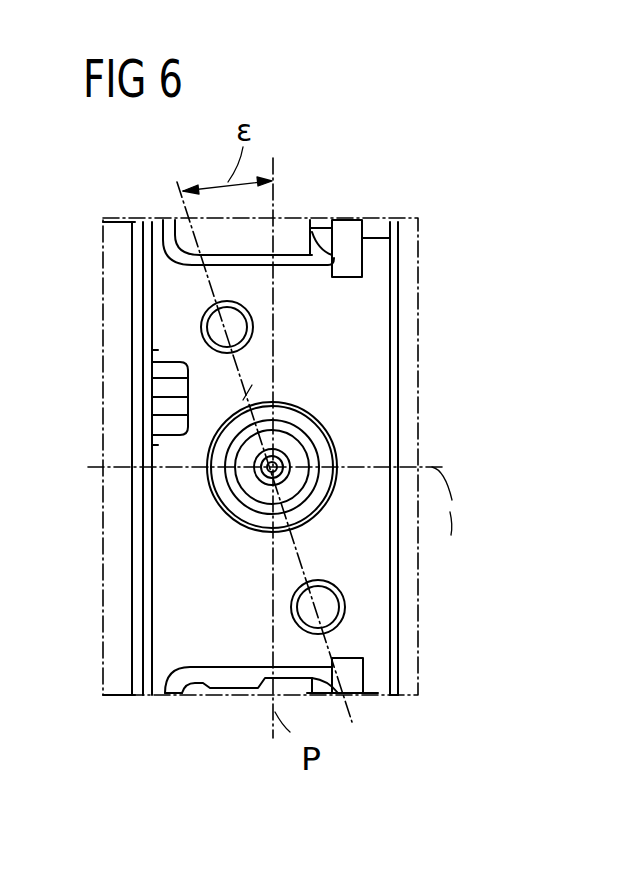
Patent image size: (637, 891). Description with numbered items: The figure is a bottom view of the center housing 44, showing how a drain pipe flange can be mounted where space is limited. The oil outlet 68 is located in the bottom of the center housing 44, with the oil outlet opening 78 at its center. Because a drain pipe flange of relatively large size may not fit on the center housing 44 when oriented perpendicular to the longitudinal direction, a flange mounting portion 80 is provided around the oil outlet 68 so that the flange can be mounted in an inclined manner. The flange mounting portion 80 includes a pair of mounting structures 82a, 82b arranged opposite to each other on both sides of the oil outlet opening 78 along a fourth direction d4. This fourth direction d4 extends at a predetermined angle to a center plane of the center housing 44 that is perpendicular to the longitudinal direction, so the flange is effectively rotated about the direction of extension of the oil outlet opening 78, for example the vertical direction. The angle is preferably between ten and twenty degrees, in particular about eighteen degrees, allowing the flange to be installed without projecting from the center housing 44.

The center housing 44 is at (382, 316).
The oil outlet 68 is at (328, 503).
The oil outlet opening 78 is at (285, 442).
The flange mounting portion 80 is at (217, 525).
The mounting structure 82a is at (253, 323).
The mounting structure 82b is at (291, 610).
The fourth direction d4 is at (252, 385).